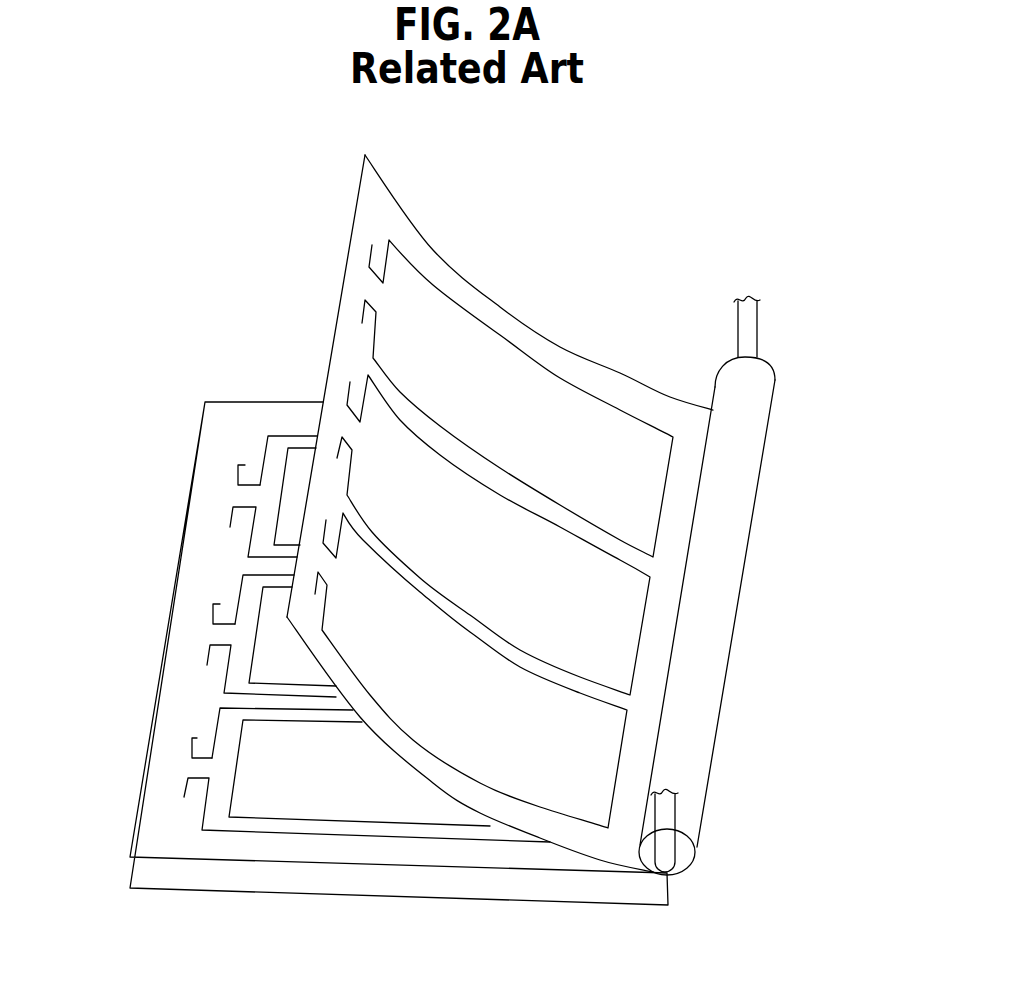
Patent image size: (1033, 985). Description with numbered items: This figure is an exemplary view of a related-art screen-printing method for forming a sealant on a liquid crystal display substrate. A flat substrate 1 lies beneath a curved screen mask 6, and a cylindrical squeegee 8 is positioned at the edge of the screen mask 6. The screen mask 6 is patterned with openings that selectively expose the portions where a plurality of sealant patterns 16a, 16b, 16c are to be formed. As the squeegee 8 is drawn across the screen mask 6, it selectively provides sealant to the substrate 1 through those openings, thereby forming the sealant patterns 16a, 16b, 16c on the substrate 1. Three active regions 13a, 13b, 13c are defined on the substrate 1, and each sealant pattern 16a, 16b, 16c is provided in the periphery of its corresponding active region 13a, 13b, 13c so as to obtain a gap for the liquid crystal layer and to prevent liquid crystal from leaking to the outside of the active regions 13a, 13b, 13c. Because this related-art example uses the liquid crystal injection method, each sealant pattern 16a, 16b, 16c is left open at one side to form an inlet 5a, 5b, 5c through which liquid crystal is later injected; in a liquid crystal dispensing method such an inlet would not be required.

The substrate 1 is at (255, 400).
The screen mask 6 is at (523, 329).
The squeegee 8 is at (735, 617).
The active region 13a is at (285, 460).
The active region 13b is at (262, 598).
The active region 13c is at (236, 736).
The inlet 5a is at (236, 496).
The inlet 5b is at (211, 633).
The inlet 5c is at (191, 767).
The sealant pattern 16a is at (248, 540).
The sealant pattern 16b is at (223, 675).
The sealant pattern 16c is at (185, 802).